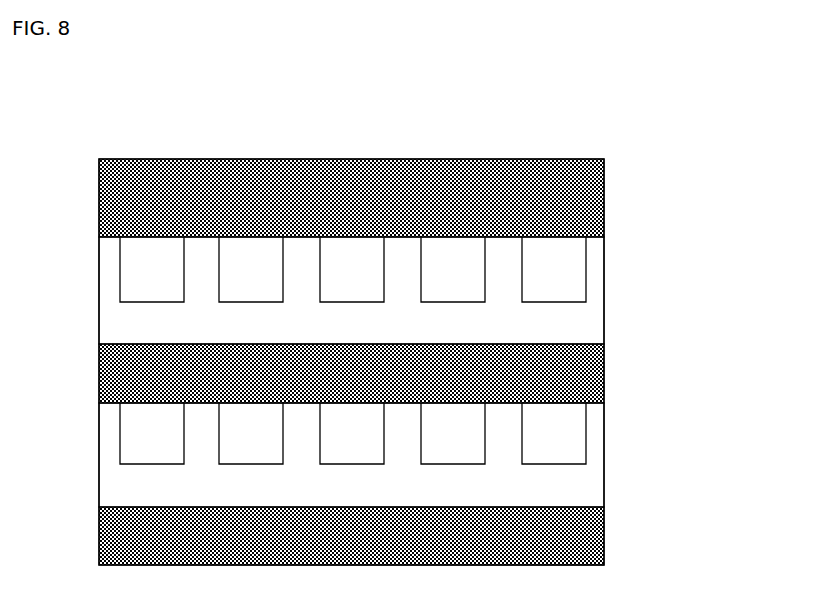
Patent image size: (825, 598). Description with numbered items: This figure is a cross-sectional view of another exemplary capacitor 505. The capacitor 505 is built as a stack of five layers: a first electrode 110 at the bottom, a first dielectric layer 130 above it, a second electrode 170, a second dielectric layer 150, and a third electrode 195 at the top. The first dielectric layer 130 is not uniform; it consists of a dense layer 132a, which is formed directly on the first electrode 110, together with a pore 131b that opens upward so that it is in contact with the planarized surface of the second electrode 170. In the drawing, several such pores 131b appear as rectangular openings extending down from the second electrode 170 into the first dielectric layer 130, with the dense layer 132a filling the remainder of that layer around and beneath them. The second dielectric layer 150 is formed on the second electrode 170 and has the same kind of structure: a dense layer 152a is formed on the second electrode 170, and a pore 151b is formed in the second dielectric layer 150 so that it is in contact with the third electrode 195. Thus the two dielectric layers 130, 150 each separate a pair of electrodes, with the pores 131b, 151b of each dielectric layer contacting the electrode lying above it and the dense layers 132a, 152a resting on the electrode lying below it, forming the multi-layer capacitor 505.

The capacitor 505 is at (112, 138).
The third electrode 195 is at (573, 204).
The second dielectric layer 150 is at (434, 290).
The pore 151b is at (541, 277).
The dense layer 152a is at (592, 332).
The second electrode 170 is at (568, 377).
The first dielectric layer 130 is at (434, 455).
The pore 131b is at (541, 431).
The dense layer 132a is at (593, 495).
The first electrode 110 is at (570, 542).